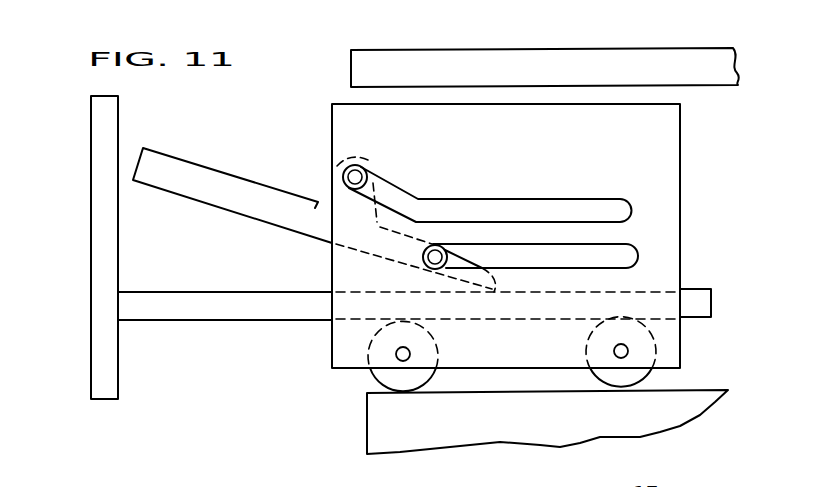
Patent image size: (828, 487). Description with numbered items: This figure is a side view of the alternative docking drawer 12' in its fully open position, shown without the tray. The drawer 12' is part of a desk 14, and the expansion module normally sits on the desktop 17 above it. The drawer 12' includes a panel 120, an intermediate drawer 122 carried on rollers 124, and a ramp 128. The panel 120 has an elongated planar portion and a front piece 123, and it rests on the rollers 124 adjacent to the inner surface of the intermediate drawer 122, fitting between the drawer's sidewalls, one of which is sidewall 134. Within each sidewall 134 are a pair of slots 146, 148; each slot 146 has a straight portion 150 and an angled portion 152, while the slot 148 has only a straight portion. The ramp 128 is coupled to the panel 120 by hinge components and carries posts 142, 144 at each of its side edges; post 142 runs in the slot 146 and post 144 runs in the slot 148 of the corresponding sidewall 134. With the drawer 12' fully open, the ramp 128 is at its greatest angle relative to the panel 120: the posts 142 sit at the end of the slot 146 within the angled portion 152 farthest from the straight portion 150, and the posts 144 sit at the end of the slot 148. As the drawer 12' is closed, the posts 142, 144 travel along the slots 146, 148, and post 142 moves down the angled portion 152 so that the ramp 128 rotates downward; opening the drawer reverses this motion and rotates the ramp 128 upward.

The drawer 12' is at (41, 72).
The desktop 17 is at (543, 50).
The desk 14 is at (513, 426).
The panel 120 is at (158, 292).
The intermediate drawer 122 is at (332, 134).
The front piece 123 is at (90, 240).
The rollers 124 is at (380, 377).
The ramp 128 is at (192, 164).
The sidewall 134 is at (649, 143).
The post 142 is at (358, 175).
The post 144 is at (440, 268).
The slot 146 is at (563, 181).
The slot 148 is at (643, 237).
The straight portion 150 is at (498, 198).
The angled portion 152 is at (408, 197).